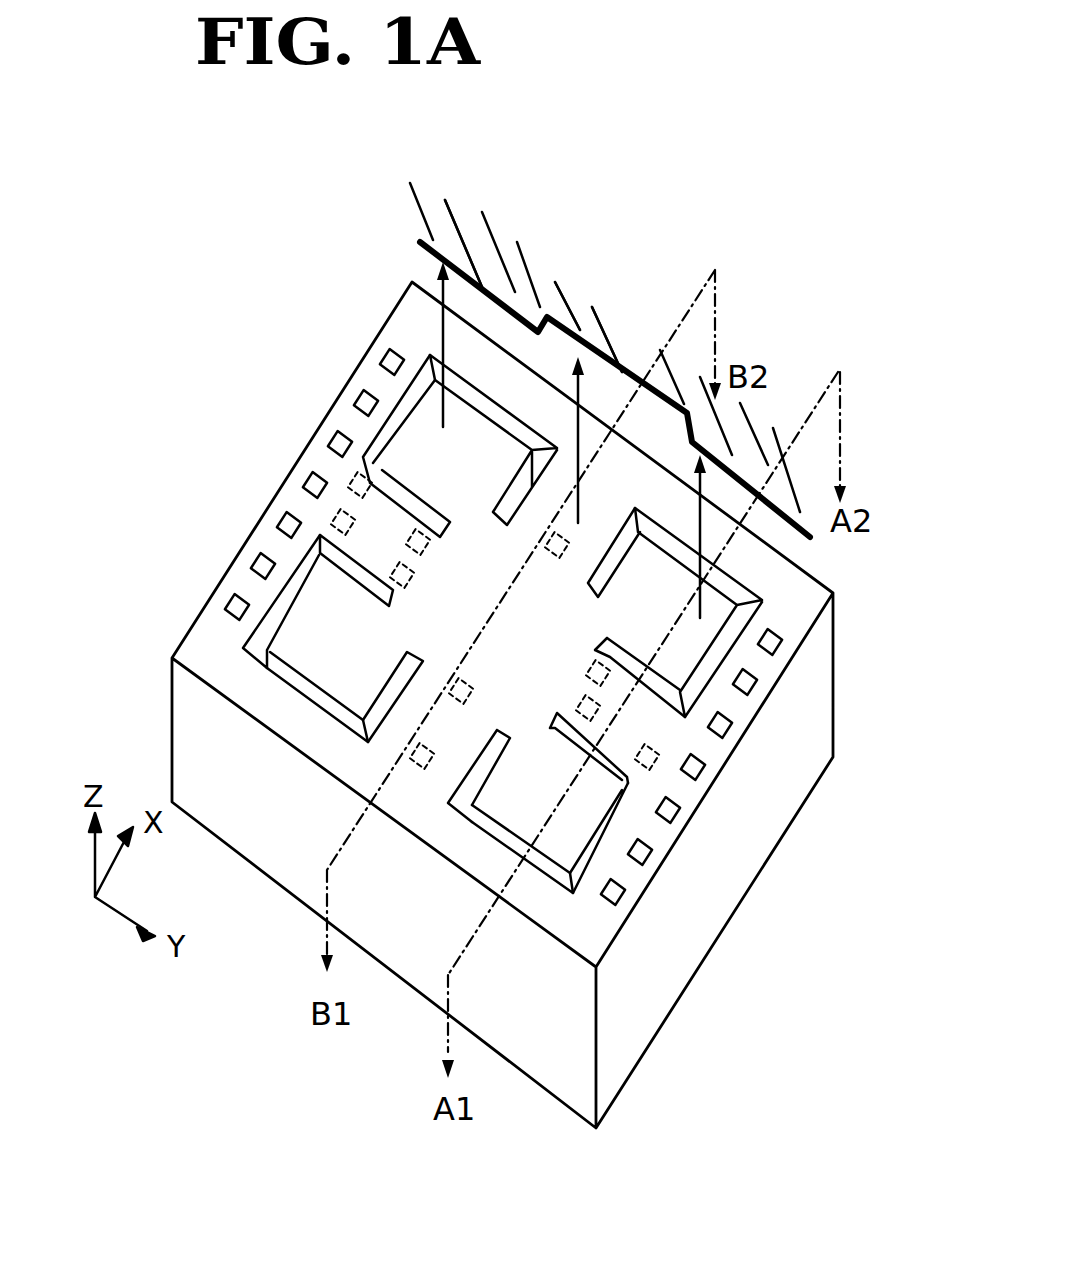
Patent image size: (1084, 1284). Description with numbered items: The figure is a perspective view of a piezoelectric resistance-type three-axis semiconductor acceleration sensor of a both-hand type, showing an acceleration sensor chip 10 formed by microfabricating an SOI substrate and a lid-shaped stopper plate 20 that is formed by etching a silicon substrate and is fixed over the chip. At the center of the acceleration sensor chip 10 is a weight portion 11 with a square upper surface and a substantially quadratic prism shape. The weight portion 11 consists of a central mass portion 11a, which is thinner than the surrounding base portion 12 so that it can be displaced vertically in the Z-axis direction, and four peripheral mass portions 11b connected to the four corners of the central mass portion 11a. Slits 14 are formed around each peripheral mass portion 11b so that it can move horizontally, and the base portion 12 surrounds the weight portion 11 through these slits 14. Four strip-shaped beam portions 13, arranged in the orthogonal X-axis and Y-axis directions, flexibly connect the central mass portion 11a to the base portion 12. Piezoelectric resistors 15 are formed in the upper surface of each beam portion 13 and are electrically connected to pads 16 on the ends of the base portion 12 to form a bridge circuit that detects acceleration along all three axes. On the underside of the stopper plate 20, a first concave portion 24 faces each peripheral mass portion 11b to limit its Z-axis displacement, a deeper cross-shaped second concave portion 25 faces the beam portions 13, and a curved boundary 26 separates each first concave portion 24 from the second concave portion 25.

The acceleration sensor chip 10 is at (190, 338).
The weight portion 11 is at (495, 608).
The central mass portion 11a is at (477, 603).
The peripheral mass portion 11b is at (433, 450).
The base portion 12 is at (807, 727).
The beam portion 13 is at (633, 727).
The slit 14 is at (603, 840).
The piezoelectric resistor 15 is at (330, 512).
The pad 16 is at (235, 612).
The stopper plate 20 is at (560, 277).
The first concave portion 24 is at (480, 286).
The second concave portion 25 is at (608, 358).
The boundary 26 is at (582, 316).